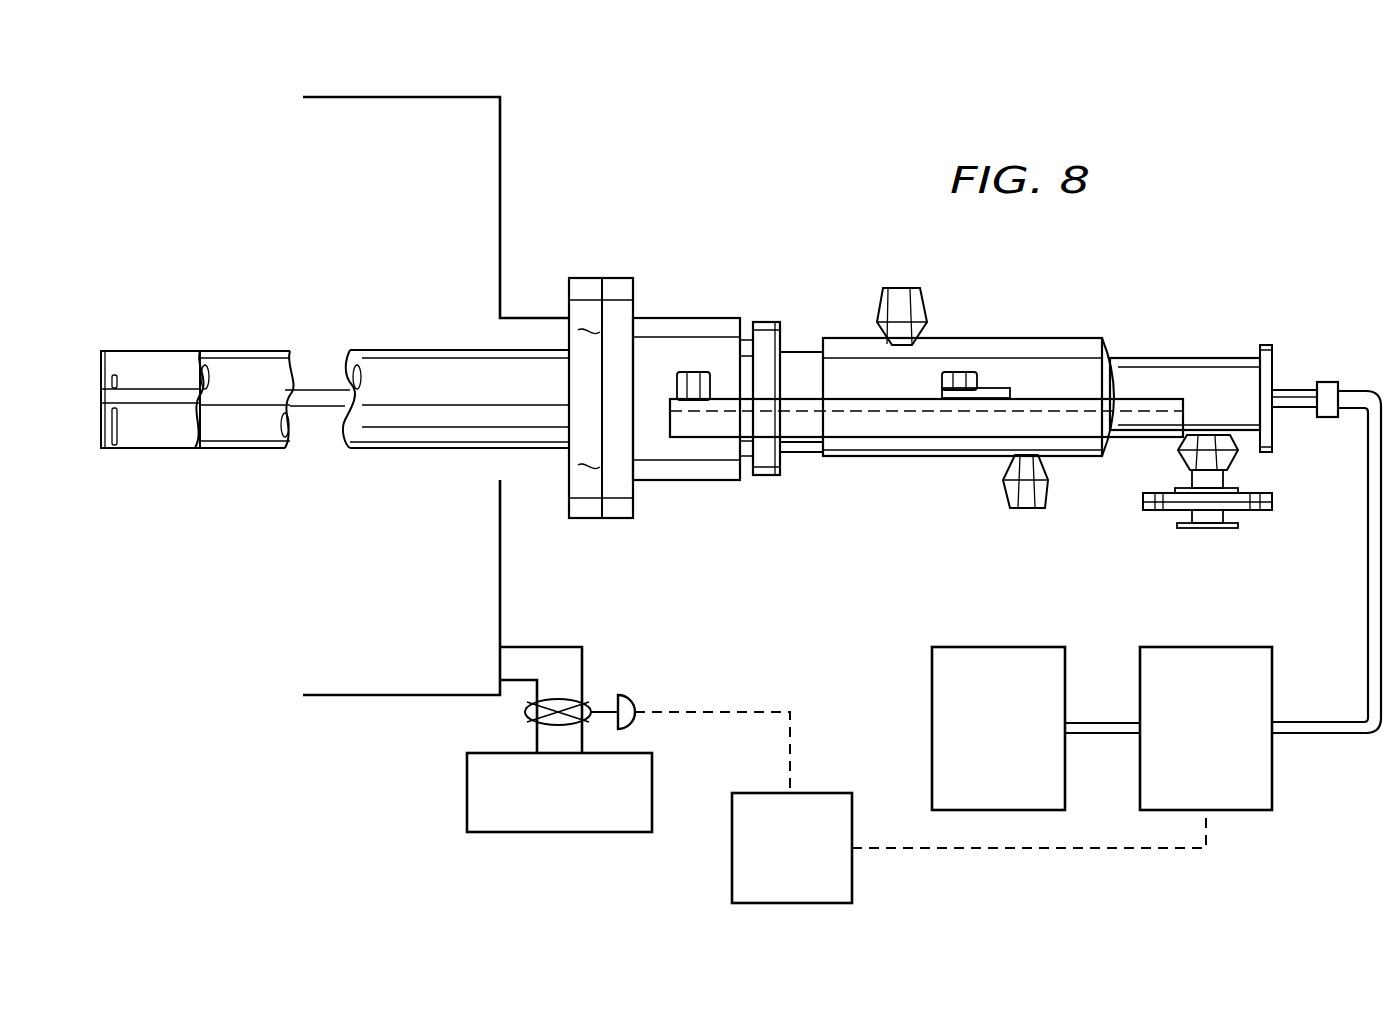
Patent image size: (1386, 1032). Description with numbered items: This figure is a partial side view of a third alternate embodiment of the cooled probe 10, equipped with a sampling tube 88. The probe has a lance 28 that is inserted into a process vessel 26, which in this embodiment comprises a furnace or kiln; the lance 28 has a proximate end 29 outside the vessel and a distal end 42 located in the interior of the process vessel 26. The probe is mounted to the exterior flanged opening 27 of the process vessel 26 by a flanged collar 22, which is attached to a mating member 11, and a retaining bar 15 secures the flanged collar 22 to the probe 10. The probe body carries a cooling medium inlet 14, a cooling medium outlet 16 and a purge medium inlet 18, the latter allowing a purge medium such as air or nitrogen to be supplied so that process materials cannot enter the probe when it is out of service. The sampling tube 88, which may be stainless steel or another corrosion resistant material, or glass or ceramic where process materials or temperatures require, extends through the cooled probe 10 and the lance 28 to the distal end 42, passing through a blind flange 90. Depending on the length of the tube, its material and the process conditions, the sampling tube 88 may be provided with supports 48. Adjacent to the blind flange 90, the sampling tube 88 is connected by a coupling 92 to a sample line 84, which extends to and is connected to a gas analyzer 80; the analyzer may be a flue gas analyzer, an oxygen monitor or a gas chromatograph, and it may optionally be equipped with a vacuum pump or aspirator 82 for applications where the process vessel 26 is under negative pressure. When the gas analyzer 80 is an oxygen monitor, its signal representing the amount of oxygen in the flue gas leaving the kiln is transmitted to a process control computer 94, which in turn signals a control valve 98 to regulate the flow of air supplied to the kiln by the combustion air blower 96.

The cooled probe 10 is at (1126, 284).
The mating member 11 is at (767, 476).
The cooling medium inlet 14 is at (1036, 509).
The retaining bar 15 is at (890, 442).
The cooling medium outlet 16 is at (908, 288).
The purge medium inlet 18 is at (1210, 530).
The flanged collar 22 is at (610, 518).
The process vessel 26 is at (371, 95).
The exterior flanged opening 27 is at (587, 278).
The lance 28 is at (402, 343).
The proximate end 29 is at (797, 352).
The distal end 42 is at (147, 328).
The supports 48 is at (120, 383).
The gas analyzer 80 is at (1193, 767).
The vacuum pump or aspirator 82 is at (985, 783).
The sample line 84 is at (1367, 580).
The sampling tube 88 is at (101, 398).
The blind flange 90 is at (1266, 345).
The coupling 92 is at (1330, 382).
The process control computer 94 is at (830, 770).
The combustion air blower 96 is at (544, 819).
The control valve 98 is at (620, 695).